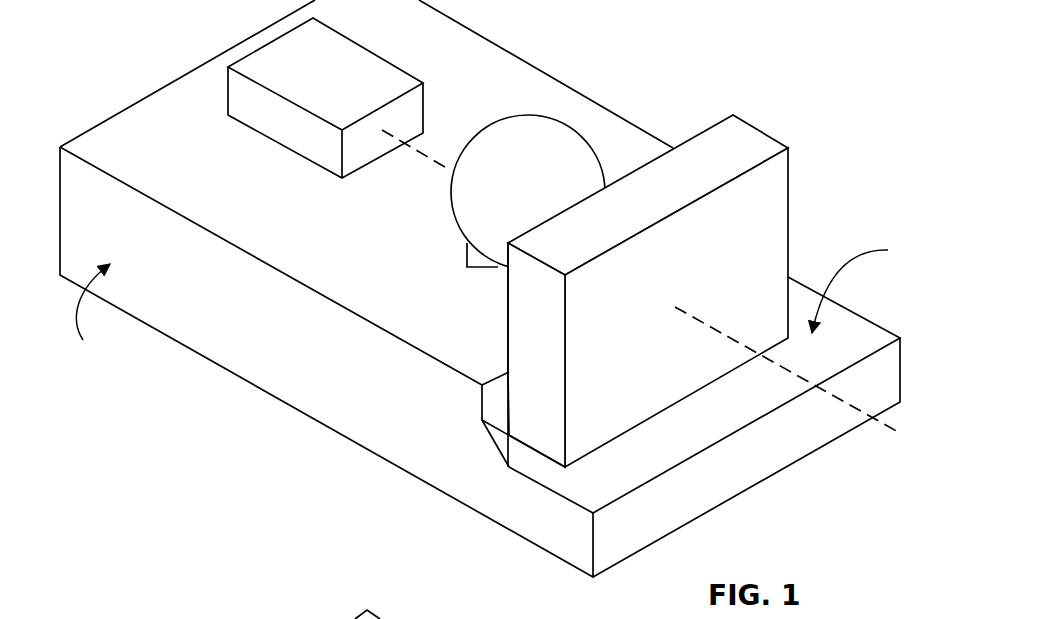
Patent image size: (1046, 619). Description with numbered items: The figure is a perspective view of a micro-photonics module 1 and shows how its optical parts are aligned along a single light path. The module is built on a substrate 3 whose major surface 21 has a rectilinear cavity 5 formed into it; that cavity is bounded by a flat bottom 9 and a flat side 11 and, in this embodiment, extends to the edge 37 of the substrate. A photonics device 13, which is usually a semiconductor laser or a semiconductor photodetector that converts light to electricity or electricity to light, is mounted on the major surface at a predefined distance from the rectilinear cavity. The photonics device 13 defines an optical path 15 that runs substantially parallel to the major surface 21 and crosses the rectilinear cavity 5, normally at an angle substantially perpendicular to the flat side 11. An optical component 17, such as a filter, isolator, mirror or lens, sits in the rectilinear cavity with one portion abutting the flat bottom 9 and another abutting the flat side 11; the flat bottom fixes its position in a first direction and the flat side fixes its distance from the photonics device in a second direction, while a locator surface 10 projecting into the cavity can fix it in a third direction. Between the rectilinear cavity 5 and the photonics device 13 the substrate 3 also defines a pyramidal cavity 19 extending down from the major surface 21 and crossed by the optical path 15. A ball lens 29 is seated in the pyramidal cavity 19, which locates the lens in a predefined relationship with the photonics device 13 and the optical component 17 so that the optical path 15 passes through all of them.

The micro-photonics module 1 is at (229, 463).
The substrate 3 is at (93, 315).
The rectilinear cavity 5 is at (858, 287).
The flat bottom 9 is at (843, 323).
The locator surface 10 is at (497, 435).
The flat side 11 is at (497, 402).
The photonics device 13 is at (342, 82).
The optical path 15 is at (422, 158).
The optical component 17 is at (745, 147).
The pyramidal cavity 19 is at (472, 256).
The major surface 21 is at (488, 67).
The ball lens 29 is at (520, 132).
The edge 37 is at (778, 450).